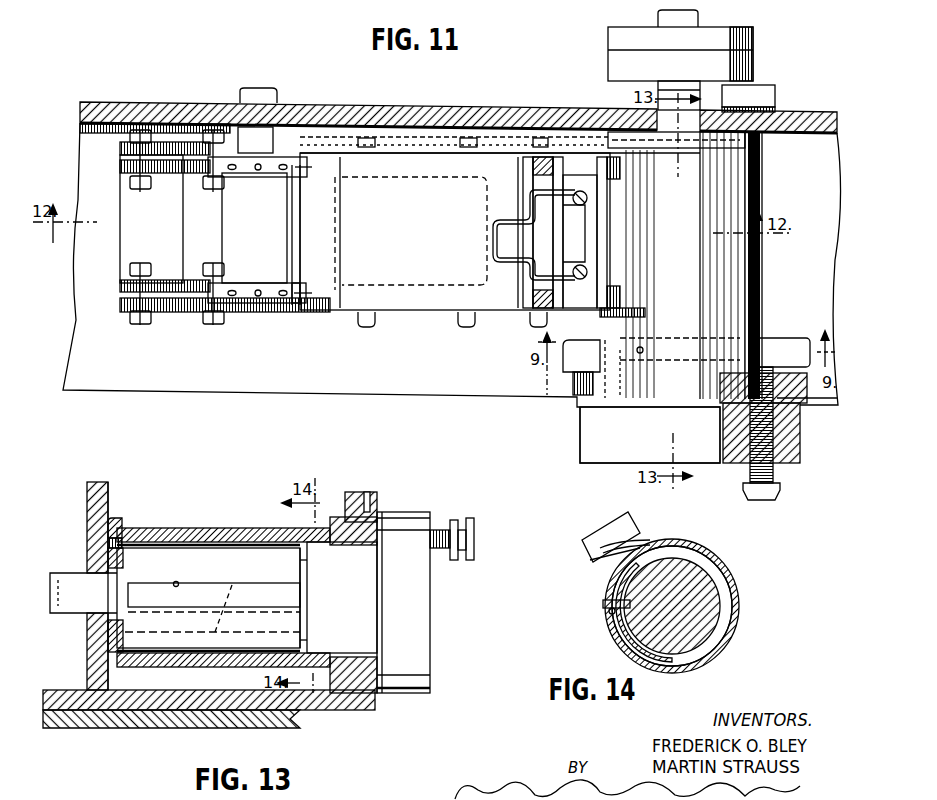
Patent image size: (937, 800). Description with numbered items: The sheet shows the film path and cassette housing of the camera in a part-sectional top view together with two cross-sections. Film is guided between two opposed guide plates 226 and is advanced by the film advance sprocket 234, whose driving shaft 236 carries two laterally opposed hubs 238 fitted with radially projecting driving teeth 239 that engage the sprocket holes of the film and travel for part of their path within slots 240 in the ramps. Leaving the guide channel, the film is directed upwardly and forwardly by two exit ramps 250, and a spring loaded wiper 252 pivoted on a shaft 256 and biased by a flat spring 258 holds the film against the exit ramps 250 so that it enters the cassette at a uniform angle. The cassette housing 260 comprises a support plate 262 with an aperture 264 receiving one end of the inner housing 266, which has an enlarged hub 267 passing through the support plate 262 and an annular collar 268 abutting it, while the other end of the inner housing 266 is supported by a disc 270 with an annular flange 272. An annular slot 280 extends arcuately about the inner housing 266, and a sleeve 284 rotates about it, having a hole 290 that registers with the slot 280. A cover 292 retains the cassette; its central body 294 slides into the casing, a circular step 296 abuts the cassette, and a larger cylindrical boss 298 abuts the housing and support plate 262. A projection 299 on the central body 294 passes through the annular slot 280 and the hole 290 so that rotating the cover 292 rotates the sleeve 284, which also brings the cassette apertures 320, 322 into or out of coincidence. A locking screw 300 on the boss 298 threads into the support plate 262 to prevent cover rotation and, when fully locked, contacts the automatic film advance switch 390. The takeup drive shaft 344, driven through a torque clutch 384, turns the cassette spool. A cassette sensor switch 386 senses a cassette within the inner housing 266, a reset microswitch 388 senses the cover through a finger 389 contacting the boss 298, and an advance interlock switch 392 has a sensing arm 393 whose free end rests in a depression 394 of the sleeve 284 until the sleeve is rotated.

In FIG. 11, the guide plates 226 is at (435, 152).
In FIG. 11, the film advance sprocket 234 is at (312, 224).
In FIG. 11, the driving shaft 236 is at (245, 97).
In FIG. 11, the hubs 238 is at (293, 157).
In FIG. 11, the driving teeth 239 is at (303, 290).
In FIG. 11, the slots 240 is at (173, 160).
In FIG. 11, the exit ramps 250 is at (558, 167).
In FIG. 11, the spring loaded wiper 252 is at (575, 238).
In FIG. 11, the shaft 256 is at (538, 167).
In FIG. 11, the flat spring 258 is at (495, 238).
In FIG. 11, the cassette housing 260 is at (646, 385).
In FIG. 13, the cassette housing 260 is at (392, 503).
In FIG. 11, the support plate 262 is at (572, 382).
In FIG. 13, the support plate 262 is at (358, 494).
In FIG. 13, the aperture 264 is at (376, 535).
In FIG. 13, the inner housing 266 is at (203, 527).
In FIG. 14, the inner housing 266 is at (725, 644).
In FIG. 13, the hub 267 is at (403, 654).
In FIG. 13, the annular collar 268 is at (335, 517).
In FIG. 13, the disc 270 is at (117, 515).
In FIG. 13, the annular flange 272 is at (122, 530).
In FIG. 14, the annular slot 280 is at (710, 566).
In FIG. 14, the sleeve 284 is at (712, 668).
In FIG. 14, the hole 290 is at (610, 614).
In FIG. 13, the cover 292 is at (445, 606).
In FIG. 13, the central body 294 is at (365, 615).
In FIG. 14, the central body 294 is at (700, 608).
In FIG. 13, the circular step 296 is at (306, 600).
In FIG. 13, the cylindrical boss 298 is at (428, 678).
In FIG. 14, the projection 299 is at (603, 605).
In FIG. 11, the locking screw 300 is at (773, 497).
In FIG. 13, the locking screw 300 is at (470, 522).
In FIG. 13, the aperture 320 is at (176, 583).
In FIG. 13, the aperture 322 is at (232, 586).
In FIG. 11, the takeup drive shaft 344 is at (700, 18).
In FIG. 13, the takeup drive shaft 344 is at (75, 613).
In FIG. 11, the torque clutch 384 is at (620, 38).
In FIG. 11, the cassette sensor switch 386 is at (770, 92).
In FIG. 13, the reset microswitch 388 is at (310, 720).
In FIG. 13, the finger 389 is at (390, 695).
In FIG. 11, the automatic film advance switch 390 is at (775, 345).
In FIG. 14, the advance interlock switch 392 is at (597, 538).
In FIG. 14, the sensing arm 393 is at (615, 562).
In FIG. 14, the depression 394 is at (652, 540).